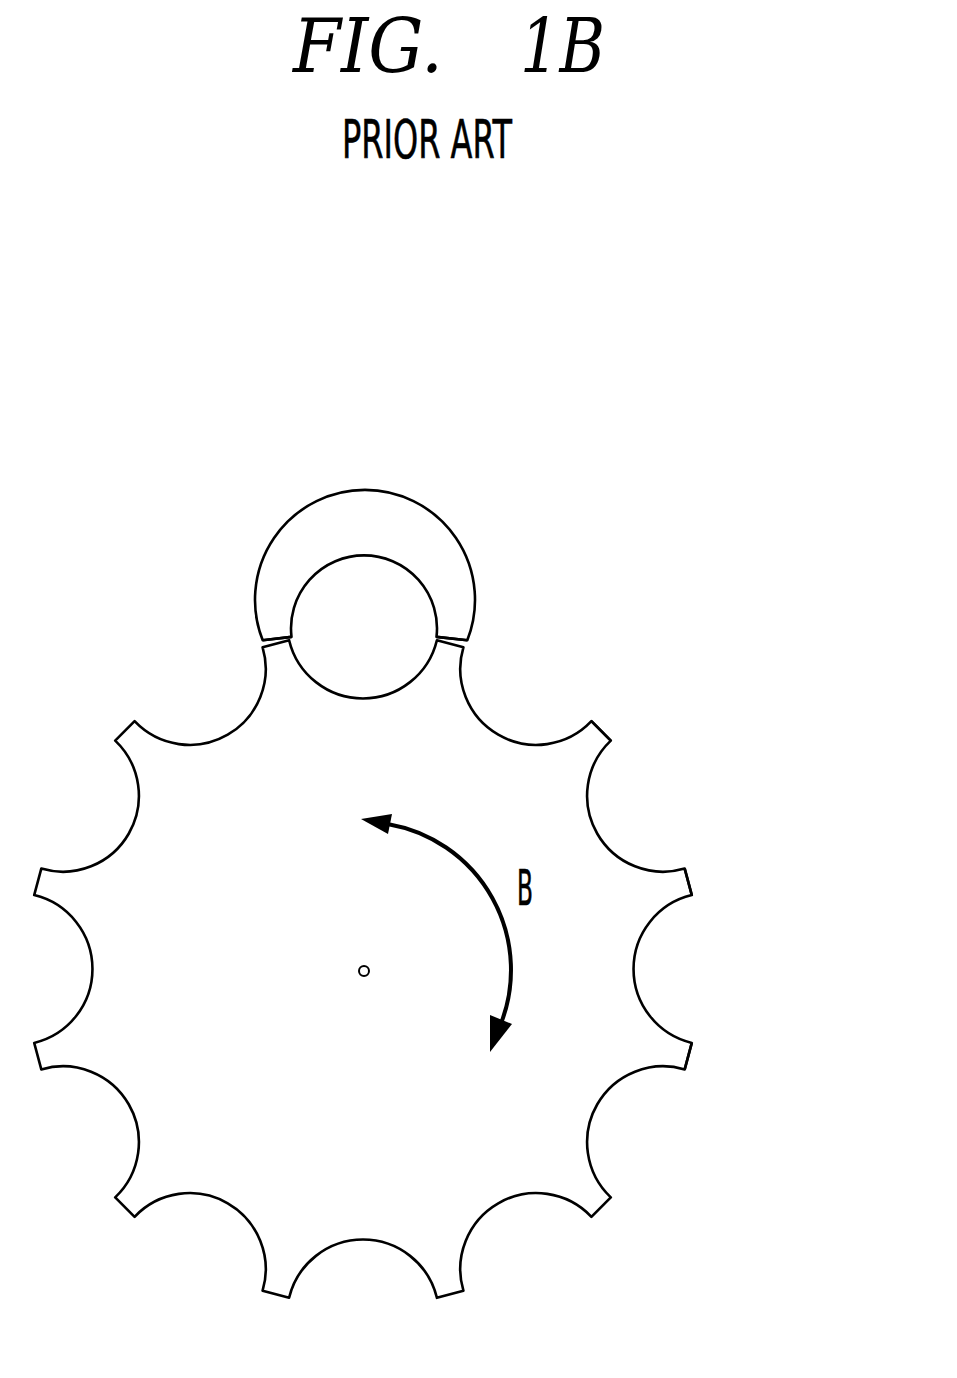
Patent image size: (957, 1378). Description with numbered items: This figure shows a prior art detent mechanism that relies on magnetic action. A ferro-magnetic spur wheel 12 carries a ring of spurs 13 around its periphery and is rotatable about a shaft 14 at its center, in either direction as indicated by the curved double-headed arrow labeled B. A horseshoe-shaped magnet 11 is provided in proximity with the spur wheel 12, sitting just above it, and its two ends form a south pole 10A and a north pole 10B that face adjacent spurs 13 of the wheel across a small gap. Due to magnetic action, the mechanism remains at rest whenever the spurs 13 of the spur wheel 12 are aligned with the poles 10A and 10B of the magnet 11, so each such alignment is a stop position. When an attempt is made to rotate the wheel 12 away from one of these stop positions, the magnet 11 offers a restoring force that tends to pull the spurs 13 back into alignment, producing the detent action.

The south pole 10A is at (253, 607).
The north pole 10B is at (477, 604).
The magnet 11 is at (366, 487).
The ferro-magnetic spur wheel 12 is at (532, 695).
The spurs 13 is at (609, 739).
The shaft 14 is at (359, 971).